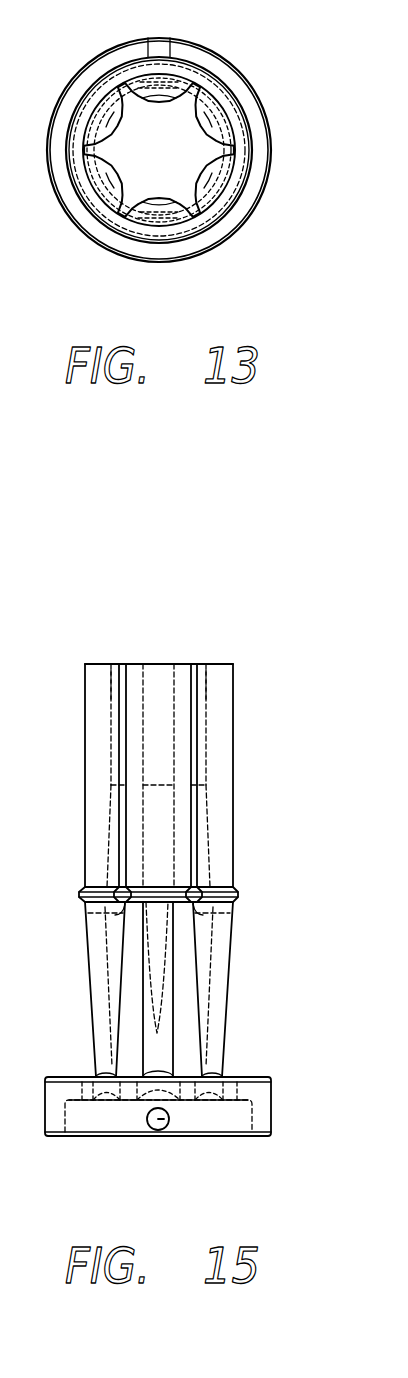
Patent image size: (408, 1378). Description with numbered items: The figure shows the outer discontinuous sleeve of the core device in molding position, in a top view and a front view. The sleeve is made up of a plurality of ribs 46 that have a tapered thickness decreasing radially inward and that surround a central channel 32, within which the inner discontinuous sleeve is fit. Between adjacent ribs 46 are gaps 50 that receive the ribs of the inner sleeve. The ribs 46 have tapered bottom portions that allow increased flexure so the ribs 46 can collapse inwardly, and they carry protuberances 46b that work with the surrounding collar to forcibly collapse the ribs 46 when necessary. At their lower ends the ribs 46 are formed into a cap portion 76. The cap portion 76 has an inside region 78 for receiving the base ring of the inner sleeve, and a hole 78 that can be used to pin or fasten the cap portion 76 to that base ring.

The central channel 32 is at (185, 1010).
The ribs 46 is at (182, 670).
The protuberances 46b is at (238, 897).
The gaps 50 is at (123, 664).
The cap portion 76 is at (273, 1105).
The hole 78 is at (152, 1122).